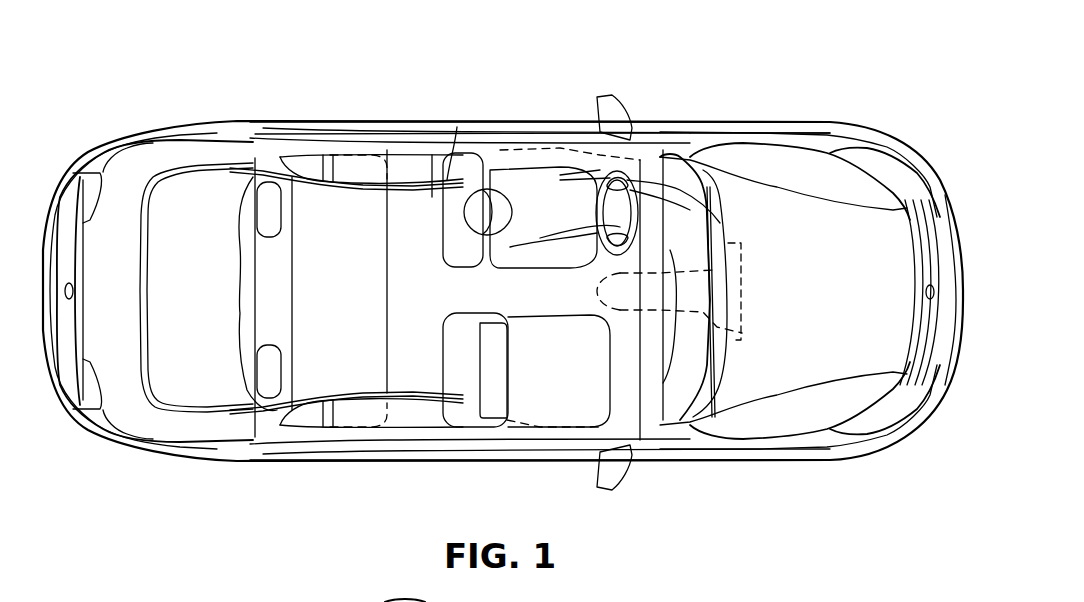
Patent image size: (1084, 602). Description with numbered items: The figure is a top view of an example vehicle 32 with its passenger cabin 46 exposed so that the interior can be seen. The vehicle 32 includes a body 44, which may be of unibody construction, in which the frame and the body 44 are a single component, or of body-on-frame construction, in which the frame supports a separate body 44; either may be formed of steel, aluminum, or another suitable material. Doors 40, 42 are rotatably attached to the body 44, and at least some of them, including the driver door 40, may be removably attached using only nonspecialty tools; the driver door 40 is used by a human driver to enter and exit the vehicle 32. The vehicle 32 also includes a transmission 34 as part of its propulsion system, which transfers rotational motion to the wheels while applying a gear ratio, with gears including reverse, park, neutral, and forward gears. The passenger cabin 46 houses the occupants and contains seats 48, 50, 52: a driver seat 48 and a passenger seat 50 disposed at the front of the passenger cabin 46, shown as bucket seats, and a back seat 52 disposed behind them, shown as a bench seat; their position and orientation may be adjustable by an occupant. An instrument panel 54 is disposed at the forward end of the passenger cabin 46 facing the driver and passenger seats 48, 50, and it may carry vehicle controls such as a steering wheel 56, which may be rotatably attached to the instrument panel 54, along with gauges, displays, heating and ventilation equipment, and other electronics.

The vehicle 32 is at (645, 65).
The transmission 34 is at (742, 290).
The driver door 40 is at (538, 108).
The door 42 is at (356, 110).
The body 44 is at (770, 110).
The passenger cabin 46 is at (420, 210).
The driver seat 48 is at (440, 230).
The passenger seat 50 is at (473, 313).
The back seat 52 is at (389, 357).
The instrument panel 54 is at (655, 377).
The steering wheel 56 is at (690, 210).